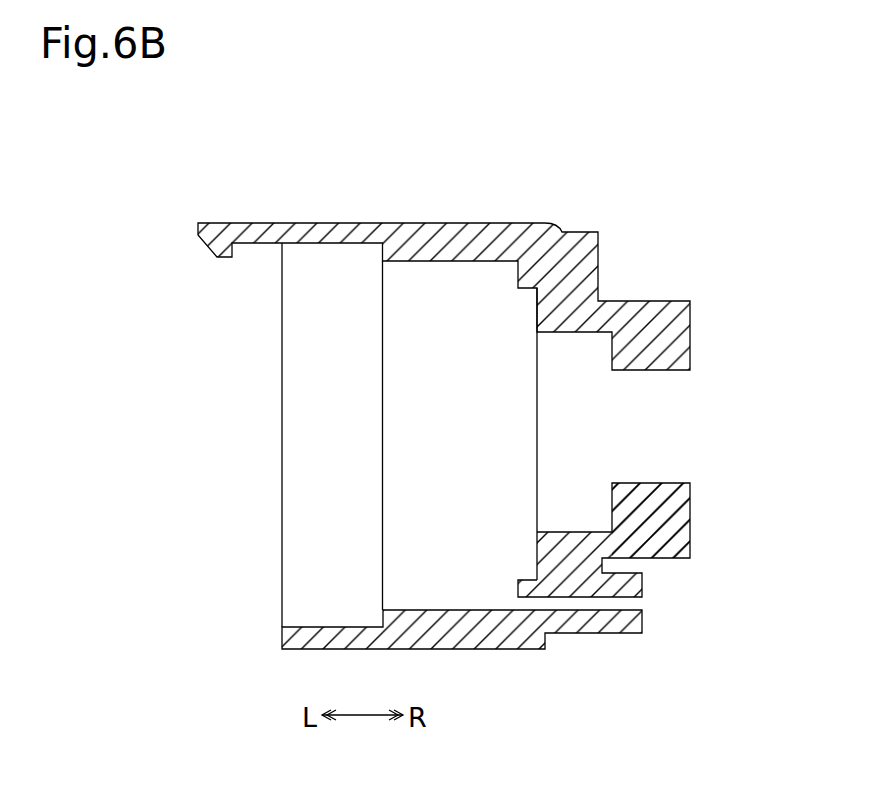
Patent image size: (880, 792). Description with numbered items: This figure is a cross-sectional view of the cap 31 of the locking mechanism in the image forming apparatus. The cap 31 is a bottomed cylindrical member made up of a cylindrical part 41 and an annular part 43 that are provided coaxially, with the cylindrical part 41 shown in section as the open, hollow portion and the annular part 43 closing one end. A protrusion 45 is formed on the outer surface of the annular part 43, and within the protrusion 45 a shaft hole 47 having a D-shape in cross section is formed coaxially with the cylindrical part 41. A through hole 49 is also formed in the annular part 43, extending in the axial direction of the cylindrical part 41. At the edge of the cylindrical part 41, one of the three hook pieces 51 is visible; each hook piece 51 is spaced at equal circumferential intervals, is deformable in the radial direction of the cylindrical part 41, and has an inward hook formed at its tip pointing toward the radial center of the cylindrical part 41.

The cap 31 is at (490, 203).
The cylindrical part 41 is at (449, 226).
The annular part 43 is at (577, 280).
The protrusion 45 is at (660, 320).
The shaft hole 47 is at (655, 483).
The through hole 49 is at (590, 600).
The hook piece 51 is at (250, 223).